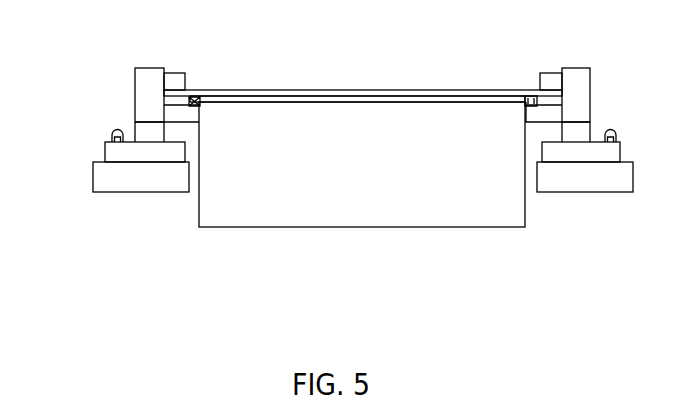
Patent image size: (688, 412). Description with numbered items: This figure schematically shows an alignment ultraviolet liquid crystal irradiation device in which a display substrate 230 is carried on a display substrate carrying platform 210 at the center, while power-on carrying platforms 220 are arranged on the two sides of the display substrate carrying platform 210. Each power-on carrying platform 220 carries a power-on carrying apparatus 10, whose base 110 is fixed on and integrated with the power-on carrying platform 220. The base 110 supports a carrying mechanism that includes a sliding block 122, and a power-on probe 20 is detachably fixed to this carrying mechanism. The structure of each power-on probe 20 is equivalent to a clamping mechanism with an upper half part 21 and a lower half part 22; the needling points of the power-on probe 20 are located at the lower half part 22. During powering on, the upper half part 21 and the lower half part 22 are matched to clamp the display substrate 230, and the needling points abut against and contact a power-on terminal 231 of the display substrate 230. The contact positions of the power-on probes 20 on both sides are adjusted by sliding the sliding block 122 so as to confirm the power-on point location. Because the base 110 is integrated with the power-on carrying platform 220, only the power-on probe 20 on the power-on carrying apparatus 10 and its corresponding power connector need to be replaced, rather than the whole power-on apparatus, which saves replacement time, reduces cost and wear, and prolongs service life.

The power-on carrying apparatus 10 is at (100, 137).
The power-on probe 20 is at (128, 71).
The upper half part 21 is at (168, 75).
The lower half part 22 is at (193, 108).
The base 110 is at (103, 153).
The sliding block 122 is at (135, 135).
The display substrate carrying platform 210 is at (343, 189).
The power-on carrying platform 220 is at (572, 180).
The display substrate 230 is at (355, 88).
The power-on terminal 231 is at (193, 98).